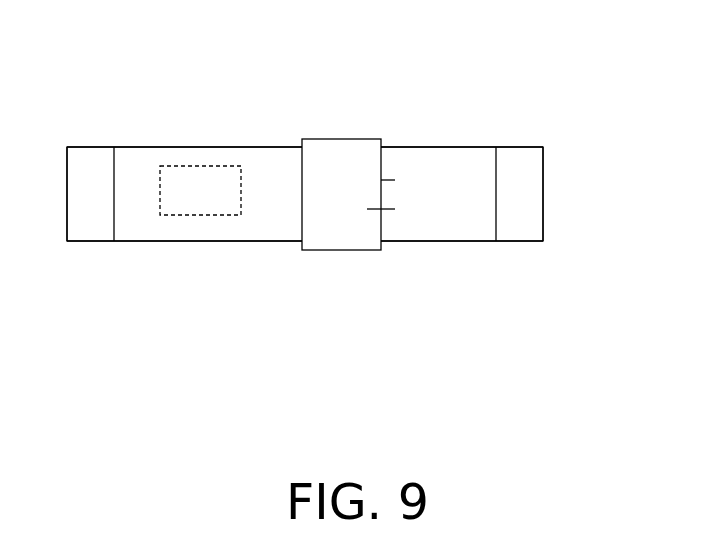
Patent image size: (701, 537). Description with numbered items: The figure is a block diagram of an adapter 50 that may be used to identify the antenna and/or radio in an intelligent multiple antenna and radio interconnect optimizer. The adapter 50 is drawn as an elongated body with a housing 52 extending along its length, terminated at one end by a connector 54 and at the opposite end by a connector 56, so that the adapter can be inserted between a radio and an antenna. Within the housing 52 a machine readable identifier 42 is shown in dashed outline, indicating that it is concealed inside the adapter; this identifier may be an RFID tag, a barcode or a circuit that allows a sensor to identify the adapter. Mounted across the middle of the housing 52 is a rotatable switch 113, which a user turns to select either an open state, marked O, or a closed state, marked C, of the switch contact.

The adapter 50 is at (448, 78).
The housing 52 is at (207, 243).
The connector 54 is at (527, 147).
The connector 56 is at (103, 147).
The machine readable identifier 42 is at (186, 166).
The rotatable switch 113 is at (333, 139).